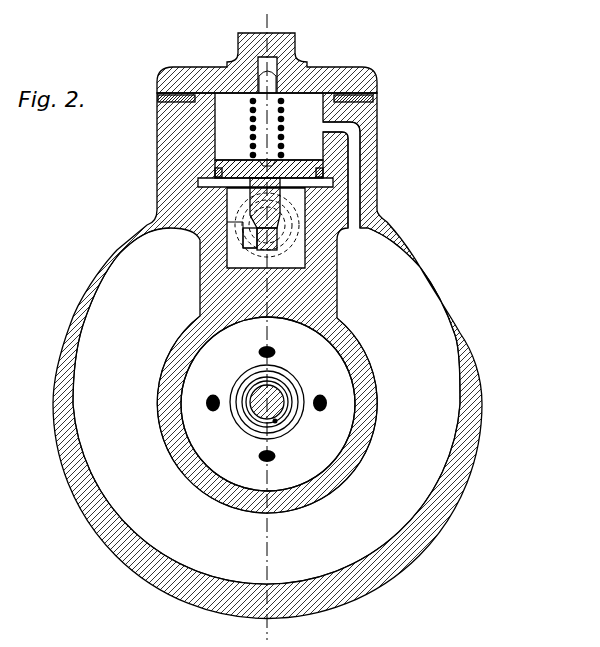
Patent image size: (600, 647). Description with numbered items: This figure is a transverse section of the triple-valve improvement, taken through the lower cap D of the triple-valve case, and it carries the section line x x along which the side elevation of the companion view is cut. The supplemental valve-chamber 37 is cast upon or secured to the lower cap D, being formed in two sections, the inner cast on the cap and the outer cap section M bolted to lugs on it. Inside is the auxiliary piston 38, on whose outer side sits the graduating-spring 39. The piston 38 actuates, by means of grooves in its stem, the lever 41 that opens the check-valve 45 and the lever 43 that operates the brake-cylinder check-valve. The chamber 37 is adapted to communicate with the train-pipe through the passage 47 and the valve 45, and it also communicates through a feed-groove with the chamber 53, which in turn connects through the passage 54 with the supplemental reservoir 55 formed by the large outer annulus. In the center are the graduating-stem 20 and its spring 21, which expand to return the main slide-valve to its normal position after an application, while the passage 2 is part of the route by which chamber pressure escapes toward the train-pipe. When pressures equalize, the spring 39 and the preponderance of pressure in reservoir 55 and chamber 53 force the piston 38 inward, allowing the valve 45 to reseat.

The cap section M is at (322, 73).
The lower cap D is at (53, 368).
The supplemental reservoir 55 is at (266, 406).
The auxiliary piston 38 is at (240, 160).
The graduating-spring 39 is at (285, 105).
The chamber 53 is at (329, 132).
The passage 54 is at (357, 195).
The valve 45 is at (280, 229).
The supplemental valve-chamber 37 is at (265, 224).
The lever 41 is at (244, 247).
The lever 43 is at (278, 251).
The passage 47 is at (256, 319).
The passage 2 is at (272, 350).
The graduating-stem 20 is at (281, 393).
The spring 21 is at (276, 422).
The section line x is at (274, 26).